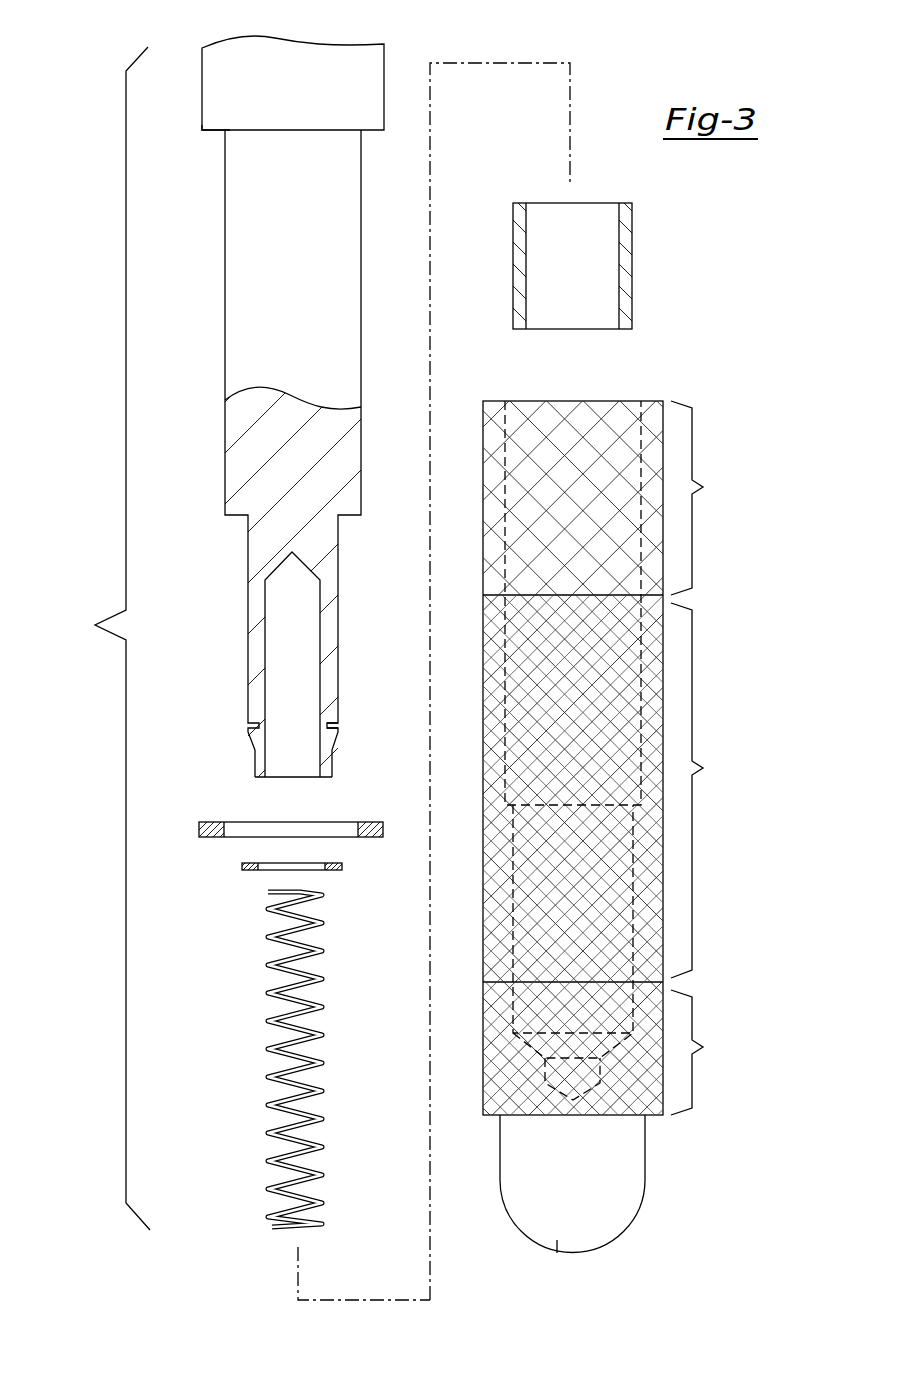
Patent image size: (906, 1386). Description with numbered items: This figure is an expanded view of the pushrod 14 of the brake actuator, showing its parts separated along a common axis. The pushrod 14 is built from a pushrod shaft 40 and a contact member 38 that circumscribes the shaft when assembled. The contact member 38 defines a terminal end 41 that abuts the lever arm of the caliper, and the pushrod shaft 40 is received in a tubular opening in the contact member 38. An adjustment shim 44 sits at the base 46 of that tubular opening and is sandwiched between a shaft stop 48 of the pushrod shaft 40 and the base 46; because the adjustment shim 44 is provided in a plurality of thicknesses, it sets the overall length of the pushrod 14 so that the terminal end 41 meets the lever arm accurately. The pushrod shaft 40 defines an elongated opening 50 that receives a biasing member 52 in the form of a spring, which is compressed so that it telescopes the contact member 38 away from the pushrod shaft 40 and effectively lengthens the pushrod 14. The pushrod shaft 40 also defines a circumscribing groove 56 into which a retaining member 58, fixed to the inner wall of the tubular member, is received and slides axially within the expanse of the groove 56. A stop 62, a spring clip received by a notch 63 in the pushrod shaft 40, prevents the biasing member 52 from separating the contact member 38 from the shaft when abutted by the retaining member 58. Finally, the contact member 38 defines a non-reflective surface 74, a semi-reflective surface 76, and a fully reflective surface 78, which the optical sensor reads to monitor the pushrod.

The pushrod 14 is at (112, 626).
The contact member 38 is at (640, 1173).
The pushrod shaft 40 is at (302, 86).
The terminal end 41 is at (557, 1250).
The adjustment shim 44 is at (212, 822).
The base 46 is at (663, 402).
The shaft stop 48 is at (218, 131).
The elongated opening 50 is at (302, 720).
The biasing member 52 is at (268, 993).
The circumscribing groove 56 is at (296, 264).
The retaining member 58 is at (632, 280).
The stop 62 is at (250, 872).
The notch 63 is at (338, 727).
The non-reflective surface 74 is at (703, 1046).
The semi-reflective surface 76 is at (703, 768).
The fully reflective surface 78 is at (703, 487).